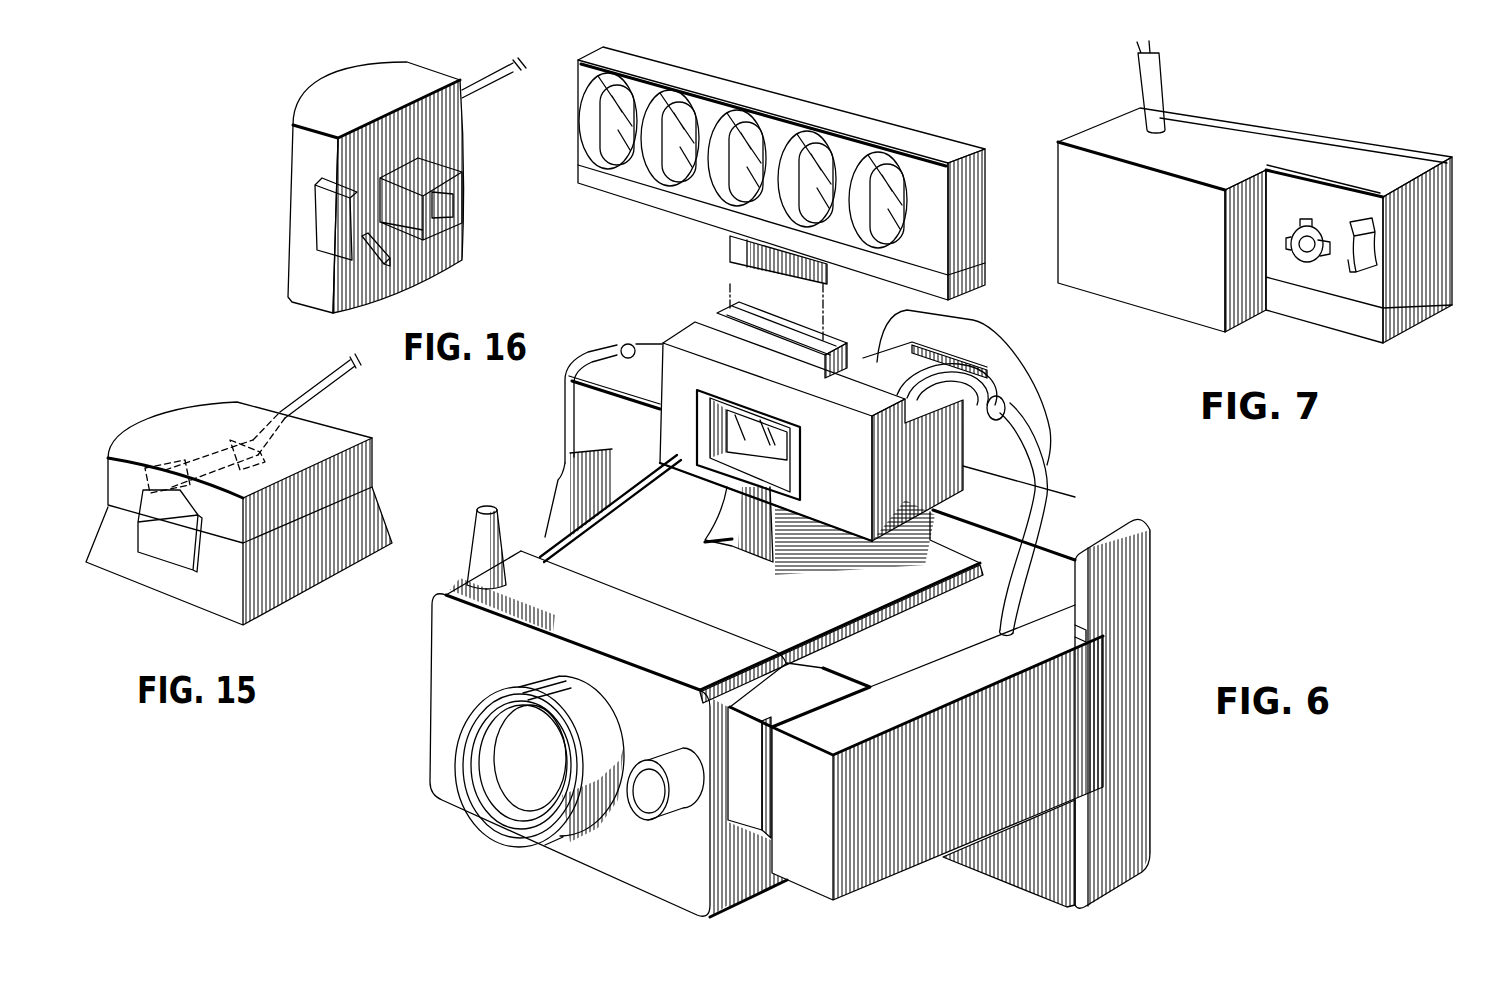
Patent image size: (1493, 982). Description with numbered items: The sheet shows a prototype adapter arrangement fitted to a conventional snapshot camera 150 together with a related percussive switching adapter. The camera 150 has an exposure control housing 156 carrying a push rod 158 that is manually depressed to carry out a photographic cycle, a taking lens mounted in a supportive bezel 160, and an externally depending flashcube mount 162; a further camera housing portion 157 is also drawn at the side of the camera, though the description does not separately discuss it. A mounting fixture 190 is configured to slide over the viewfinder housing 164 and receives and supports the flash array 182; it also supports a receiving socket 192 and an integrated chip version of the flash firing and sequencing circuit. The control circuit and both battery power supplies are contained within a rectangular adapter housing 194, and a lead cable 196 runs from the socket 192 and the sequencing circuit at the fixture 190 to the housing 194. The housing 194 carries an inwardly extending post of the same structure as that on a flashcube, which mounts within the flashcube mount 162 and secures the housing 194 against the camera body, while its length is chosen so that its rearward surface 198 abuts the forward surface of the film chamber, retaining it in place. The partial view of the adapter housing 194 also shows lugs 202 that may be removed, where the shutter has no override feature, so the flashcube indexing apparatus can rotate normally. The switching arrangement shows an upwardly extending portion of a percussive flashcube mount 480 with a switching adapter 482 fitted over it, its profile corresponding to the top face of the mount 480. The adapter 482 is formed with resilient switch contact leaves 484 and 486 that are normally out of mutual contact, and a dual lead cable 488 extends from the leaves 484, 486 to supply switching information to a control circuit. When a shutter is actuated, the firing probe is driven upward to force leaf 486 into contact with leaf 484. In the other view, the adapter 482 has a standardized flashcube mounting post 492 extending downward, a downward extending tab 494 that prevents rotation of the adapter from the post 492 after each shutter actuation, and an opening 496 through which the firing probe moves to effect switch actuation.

In FIG. 6, the snapshot camera 150 is at (1150, 522).
In FIG. 6, the exposure control housing 156 is at (451, 641).
In FIG. 6, the handle 157 is at (1153, 636).
In FIG. 6, the push rod 158 is at (485, 537).
In FIG. 6, the supportive bezel 160 is at (520, 780).
In FIG. 6, the flashcube mount 162 is at (747, 803).
In FIG. 6, the viewfinder housing 164 is at (928, 358).
In FIG. 6, the flash array 182 is at (870, 127).
In FIG. 6, the mounting fixture 190 is at (680, 345).
In FIG. 6, the receiving socket 192 is at (812, 343).
In FIG. 6, the adapter housing 194 is at (897, 855).
In FIG. 7, the adapter housing 194 is at (1160, 293).
In FIG. 6, the lead cable 196 is at (1045, 473).
In FIG. 6, the rearward surface 198 is at (1075, 630).
In FIG. 7, the rearward surface 198 is at (1212, 110).
In FIG. 7, the lugs 202 is at (1320, 262).
In FIG. 15, the percussive flashcube mount 480 is at (283, 587).
In FIG. 16, the switching adapter 482 is at (460, 127).
In FIG. 15, the switching adapter 482 is at (170, 430).
In FIG. 15, the switch contact leaf 484 is at (220, 440).
In FIG. 15, the switch contact leaf 486 is at (142, 470).
In FIG. 16, the dual lead cable 488 is at (467, 83).
In FIG. 15, the dual lead cable 488 is at (315, 385).
In FIG. 16, the flashcube mounting post 492 is at (463, 192).
In FIG. 16, the tab 494 is at (332, 223).
In FIG. 15, the tab 494 is at (170, 555).
In FIG. 16, the opening 496 is at (383, 295).